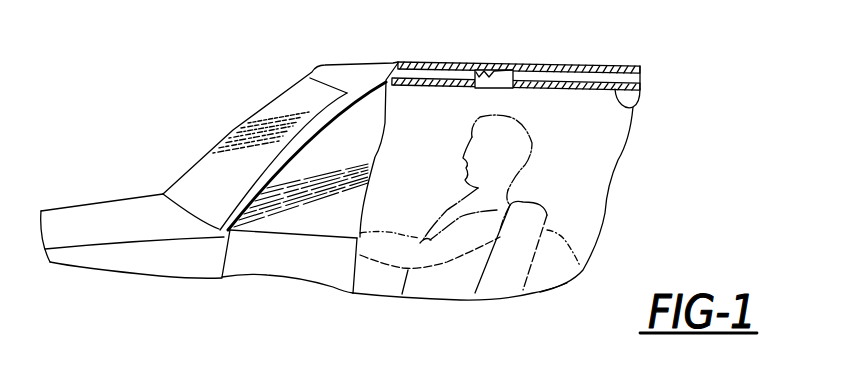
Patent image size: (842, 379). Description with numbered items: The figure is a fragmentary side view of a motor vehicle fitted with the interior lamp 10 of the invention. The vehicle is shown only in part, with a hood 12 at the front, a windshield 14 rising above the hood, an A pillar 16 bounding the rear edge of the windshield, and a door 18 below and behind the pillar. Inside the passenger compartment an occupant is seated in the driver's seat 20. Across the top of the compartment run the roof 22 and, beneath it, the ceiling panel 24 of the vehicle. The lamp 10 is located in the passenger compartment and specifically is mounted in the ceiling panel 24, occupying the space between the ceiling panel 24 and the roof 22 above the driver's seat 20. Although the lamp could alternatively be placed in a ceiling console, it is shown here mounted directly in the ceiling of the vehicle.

The lamp 10 is at (528, 108).
The hood 12 is at (97, 212).
The windshield 14 is at (282, 108).
The A pillar 16 is at (240, 205).
The door 18 is at (260, 258).
The driver's seat 20 is at (578, 262).
The roof 22 is at (634, 66).
The ceiling panel 24 is at (633, 107).